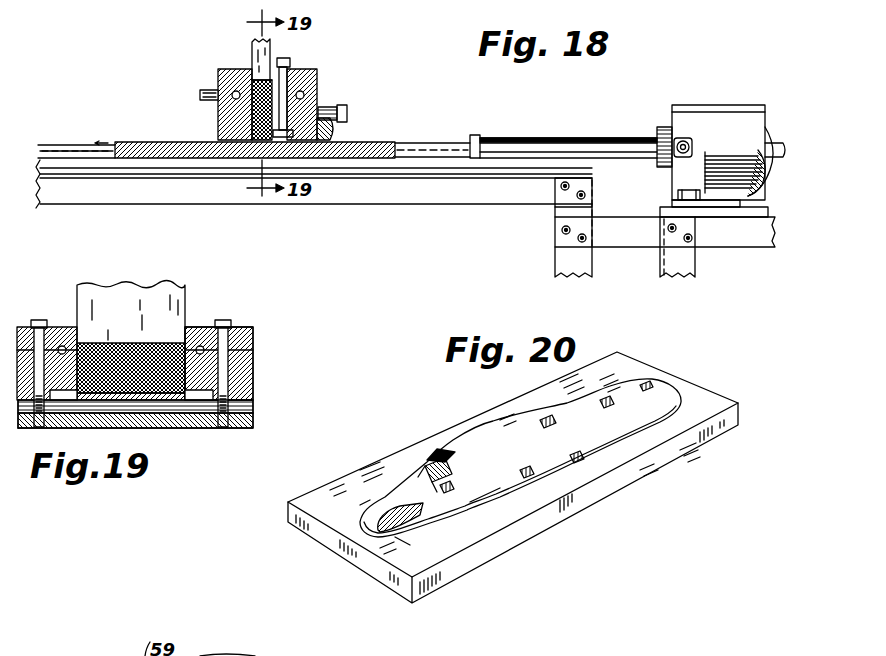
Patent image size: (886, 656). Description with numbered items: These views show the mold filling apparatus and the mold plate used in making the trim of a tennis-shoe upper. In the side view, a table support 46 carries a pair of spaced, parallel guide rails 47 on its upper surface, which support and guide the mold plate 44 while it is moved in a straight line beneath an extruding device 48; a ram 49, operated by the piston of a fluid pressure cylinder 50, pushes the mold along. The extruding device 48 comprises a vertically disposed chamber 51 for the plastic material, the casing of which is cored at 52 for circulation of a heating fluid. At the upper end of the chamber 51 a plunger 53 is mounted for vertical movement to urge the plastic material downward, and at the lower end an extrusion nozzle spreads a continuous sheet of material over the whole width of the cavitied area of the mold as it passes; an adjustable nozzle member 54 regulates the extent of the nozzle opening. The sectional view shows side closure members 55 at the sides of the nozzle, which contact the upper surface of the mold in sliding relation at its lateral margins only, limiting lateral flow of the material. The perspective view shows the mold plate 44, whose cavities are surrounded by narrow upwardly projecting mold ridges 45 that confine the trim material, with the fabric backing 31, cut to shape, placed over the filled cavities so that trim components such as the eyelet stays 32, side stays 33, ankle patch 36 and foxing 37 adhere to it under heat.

In FIG. 20, the fabric backing 31 is at (458, 447).
In FIG. 20, the eyelet stays 32 is at (417, 477).
In FIG. 20, the side stays 33 is at (432, 504).
In FIG. 20, the ankle patch 36 is at (427, 460).
In FIG. 20, the foxing 37 is at (473, 500).
In FIG. 19, the mold plate 44 is at (157, 422).
In FIG. 20, the mold plate 44 is at (618, 477).
In FIG. 20, the mold ridges 45 is at (403, 540).
In FIG. 18, the table support 46 is at (366, 168).
In FIG. 19, the table support 46 is at (253, 422).
In FIG. 18, the guide rails 47 is at (46, 142).
In FIG. 19, the guide rails 47 is at (43, 422).
In FIG. 18, the extruding device 48 is at (228, 70).
In FIG. 19, the extruding device 48 is at (197, 330).
In FIG. 18, the ram 49 is at (428, 145).
In FIG. 18, the fluid pressure cylinder 50 is at (695, 110).
In FIG. 18, the chamber 51 is at (220, 103).
In FIG. 19, the chamber 51 is at (88, 298).
In FIG. 18, the cored casing 52 is at (318, 80).
In FIG. 19, the cored casing 52 is at (55, 328).
In FIG. 18, the plunger 53 is at (267, 52).
In FIG. 19, the plunger 53 is at (107, 285).
In FIG. 18, the adjustable nozzle member 54 is at (330, 138).
In FIG. 19, the side closure members 55 is at (227, 383).